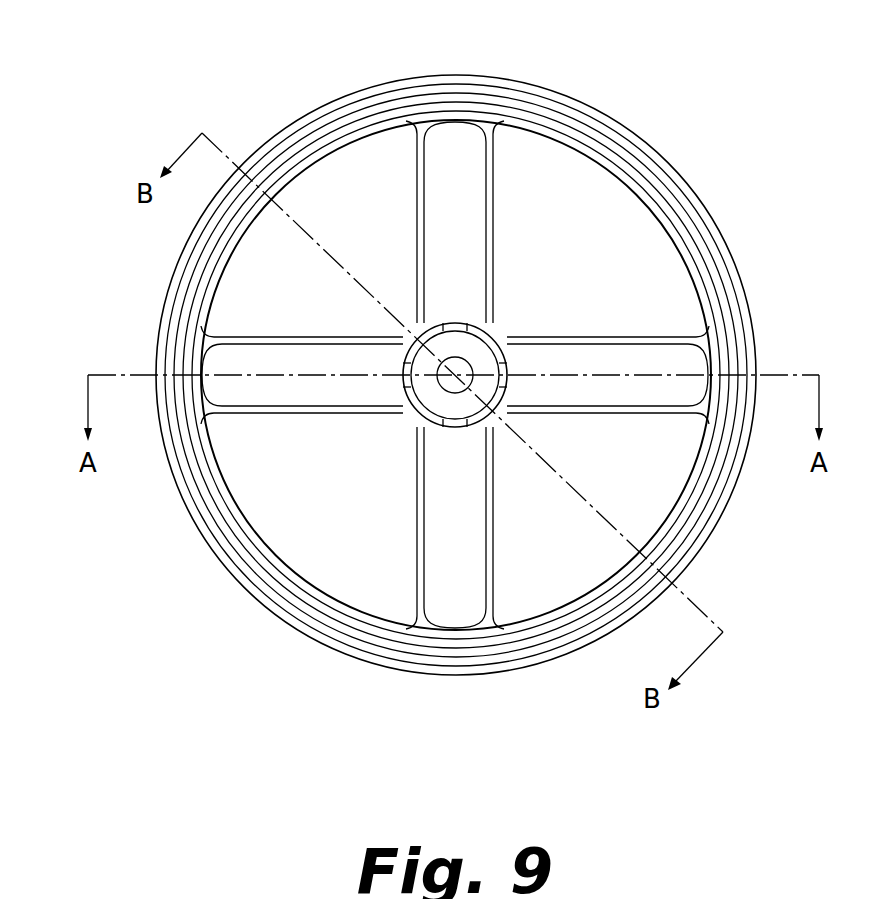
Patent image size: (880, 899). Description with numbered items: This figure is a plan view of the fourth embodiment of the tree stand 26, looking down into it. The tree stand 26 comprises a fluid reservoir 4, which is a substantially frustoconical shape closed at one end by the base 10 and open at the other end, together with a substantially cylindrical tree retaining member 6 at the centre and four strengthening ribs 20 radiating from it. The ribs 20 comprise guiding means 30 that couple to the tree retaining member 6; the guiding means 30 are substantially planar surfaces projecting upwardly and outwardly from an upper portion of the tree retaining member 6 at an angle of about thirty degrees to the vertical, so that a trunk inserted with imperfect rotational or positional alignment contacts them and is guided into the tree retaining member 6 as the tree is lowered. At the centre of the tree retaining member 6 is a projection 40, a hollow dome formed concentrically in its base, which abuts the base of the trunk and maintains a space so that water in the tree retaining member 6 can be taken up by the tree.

The fluid reservoir 4 is at (343, 97).
The tree stand 26 is at (116, 284).
The base 10 is at (248, 293).
The strengthening ribs 20 is at (445, 228).
The tree retaining member 6 is at (490, 343).
The guiding means 30 is at (453, 325).
The projection 40 is at (418, 406).